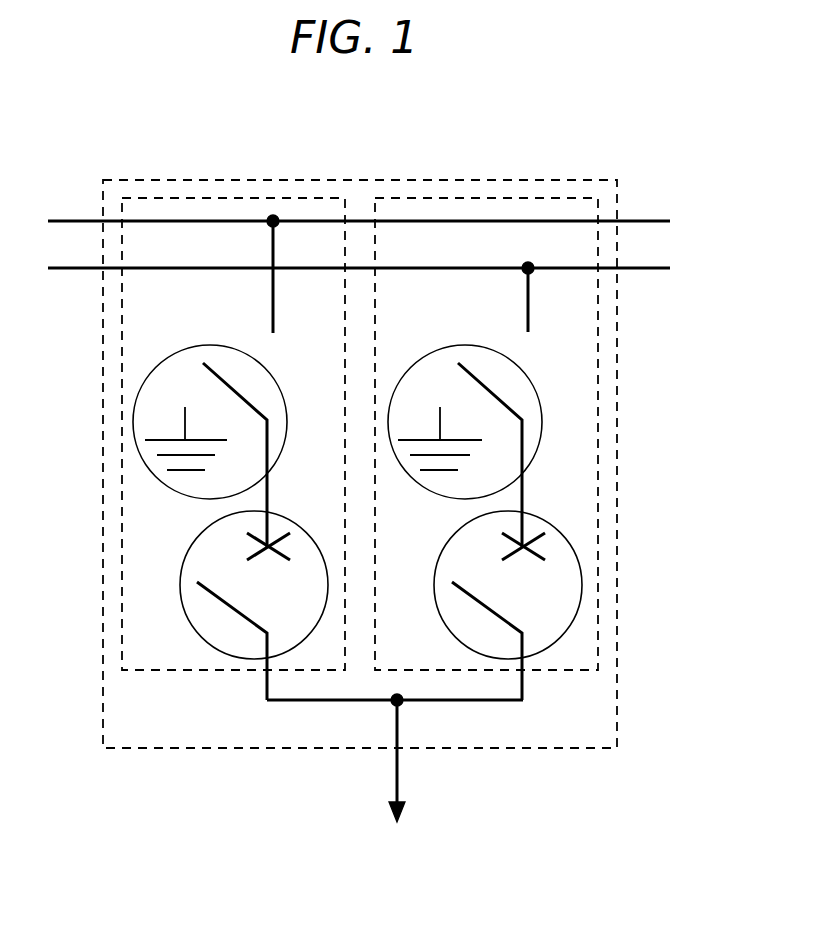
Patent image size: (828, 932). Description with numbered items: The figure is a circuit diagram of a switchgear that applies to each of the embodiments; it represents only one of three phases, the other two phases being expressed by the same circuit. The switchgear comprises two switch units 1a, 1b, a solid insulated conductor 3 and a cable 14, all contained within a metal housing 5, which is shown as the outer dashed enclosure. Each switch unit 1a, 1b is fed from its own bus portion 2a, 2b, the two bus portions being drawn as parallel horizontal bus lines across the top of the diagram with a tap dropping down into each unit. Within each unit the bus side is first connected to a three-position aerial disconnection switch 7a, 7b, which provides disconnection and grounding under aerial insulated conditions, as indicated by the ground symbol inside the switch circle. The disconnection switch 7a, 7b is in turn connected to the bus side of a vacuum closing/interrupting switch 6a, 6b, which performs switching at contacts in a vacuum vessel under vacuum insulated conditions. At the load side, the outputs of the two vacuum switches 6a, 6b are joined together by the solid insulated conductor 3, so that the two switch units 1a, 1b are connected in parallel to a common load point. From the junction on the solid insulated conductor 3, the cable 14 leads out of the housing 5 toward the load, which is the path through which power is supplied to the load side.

The switch unit 1a is at (225, 198).
The switch unit 1b is at (477, 198).
The bus portion 2a is at (272, 300).
The bus portion 2b is at (527, 300).
The solid insulated conductor 3 is at (478, 701).
The housing 5 is at (617, 198).
The vacuum closing/interrupting switch 6a is at (183, 568).
The vacuum closing/interrupting switch 6b is at (580, 557).
The three-position aerial disconnection switch 7a is at (143, 386).
The three-position aerial disconnection switch 7b is at (536, 392).
The cable 14 is at (397, 775).